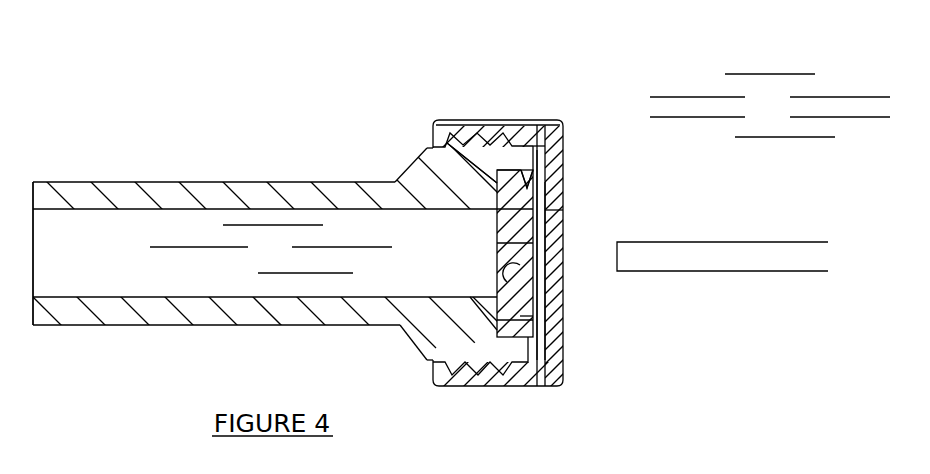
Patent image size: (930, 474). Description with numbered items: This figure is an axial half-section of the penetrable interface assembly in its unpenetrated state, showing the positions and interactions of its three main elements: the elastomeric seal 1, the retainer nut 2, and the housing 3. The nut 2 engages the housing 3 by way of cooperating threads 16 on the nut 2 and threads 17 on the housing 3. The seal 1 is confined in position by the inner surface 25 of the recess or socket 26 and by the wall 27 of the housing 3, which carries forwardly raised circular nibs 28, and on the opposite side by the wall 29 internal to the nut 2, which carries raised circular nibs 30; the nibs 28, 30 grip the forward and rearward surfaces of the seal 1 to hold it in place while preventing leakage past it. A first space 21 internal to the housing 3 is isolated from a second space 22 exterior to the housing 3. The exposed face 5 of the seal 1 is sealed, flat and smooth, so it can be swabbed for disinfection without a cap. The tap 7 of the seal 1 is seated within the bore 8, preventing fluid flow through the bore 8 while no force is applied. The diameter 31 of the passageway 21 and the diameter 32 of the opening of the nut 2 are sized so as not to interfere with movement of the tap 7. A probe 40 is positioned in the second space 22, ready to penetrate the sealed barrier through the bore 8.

The elastomeric seal 1 is at (507, 290).
The retainer nut 2 is at (552, 124).
The housing 3 is at (137, 193).
The face 5 is at (545, 300).
The tap 7 is at (537, 292).
The bore 8 is at (505, 282).
The threads 16 is at (511, 375).
The threads 17 is at (478, 367).
The first space 21 is at (271, 249).
The second space 22 is at (770, 105).
The inner surface 25 is at (528, 186).
The recess 26 is at (522, 183).
The wall 27 is at (495, 183).
The raised circular nibs 28 is at (520, 190).
The wall 29 is at (522, 315).
The raised circular nibs 30 is at (533, 167).
The diameter 31 is at (225, 297).
The diameter 32 is at (550, 210).
The probe 40 is at (690, 260).